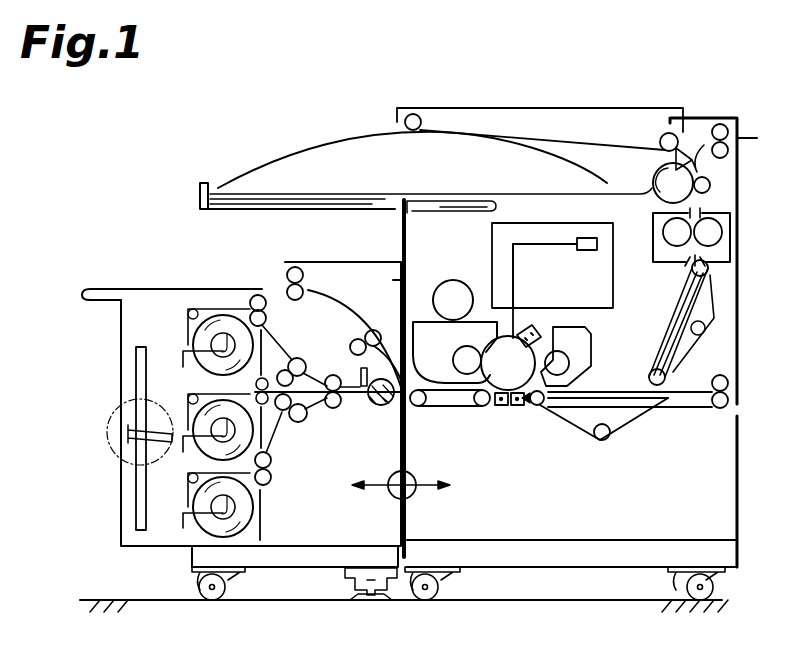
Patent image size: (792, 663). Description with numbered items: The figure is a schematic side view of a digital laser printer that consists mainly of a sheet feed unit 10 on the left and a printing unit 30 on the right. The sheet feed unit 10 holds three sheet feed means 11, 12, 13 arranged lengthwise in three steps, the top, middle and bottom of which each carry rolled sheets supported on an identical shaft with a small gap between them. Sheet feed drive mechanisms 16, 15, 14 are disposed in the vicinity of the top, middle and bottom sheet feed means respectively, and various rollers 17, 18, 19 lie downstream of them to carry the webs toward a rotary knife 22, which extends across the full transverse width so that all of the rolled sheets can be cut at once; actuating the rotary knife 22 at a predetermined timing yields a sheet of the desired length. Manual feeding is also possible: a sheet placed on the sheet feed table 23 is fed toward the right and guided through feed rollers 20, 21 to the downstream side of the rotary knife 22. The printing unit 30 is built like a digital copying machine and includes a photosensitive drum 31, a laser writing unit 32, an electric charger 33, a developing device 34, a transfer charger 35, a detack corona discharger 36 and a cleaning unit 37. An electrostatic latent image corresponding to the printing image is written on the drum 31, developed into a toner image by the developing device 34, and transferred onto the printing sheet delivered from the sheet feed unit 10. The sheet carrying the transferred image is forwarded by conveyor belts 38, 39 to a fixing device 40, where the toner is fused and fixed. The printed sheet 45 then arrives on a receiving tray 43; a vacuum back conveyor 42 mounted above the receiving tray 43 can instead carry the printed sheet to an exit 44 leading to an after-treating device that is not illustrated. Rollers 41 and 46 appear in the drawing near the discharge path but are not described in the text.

The sheet feed unit 10 is at (302, 540).
The sheet feed means 11 is at (252, 507).
The sheet feed means 12 is at (196, 449).
The sheet feed means 13 is at (217, 318).
The sheet feed drive mechanism 14 is at (270, 461).
The sheet feed drive mechanism 15 is at (272, 378).
The sheet feed drive mechanism 16 is at (254, 350).
The roller 17 is at (300, 412).
The roller 18 is at (336, 408).
The roller 19 is at (299, 358).
The feed roller 20 is at (303, 276).
The feed roller 21 is at (371, 330).
The rotary knife 22 is at (381, 405).
The sheet feed table 23 is at (146, 289).
The printing unit 30 is at (588, 542).
The photosensitive drum 31 is at (528, 404).
The laser writing unit 32 is at (613, 273).
The electric charger 33 is at (531, 328).
The developing device 34 is at (424, 324).
The transfer charger 35 is at (494, 406).
The detack corona discharger 36 is at (512, 407).
The cleaning unit 37 is at (566, 358).
The conveyor belt 38 is at (615, 406).
The conveyor belt 39 is at (668, 336).
The fixing device 40 is at (716, 236).
The discharge roller 41 is at (711, 186).
The vacuum back conveyor 42 is at (508, 128).
The receiving tray 43 is at (200, 195).
The exit 44 is at (718, 124).
The printed sheet 45 is at (280, 180).
The discharge roller pair 46 is at (724, 406).